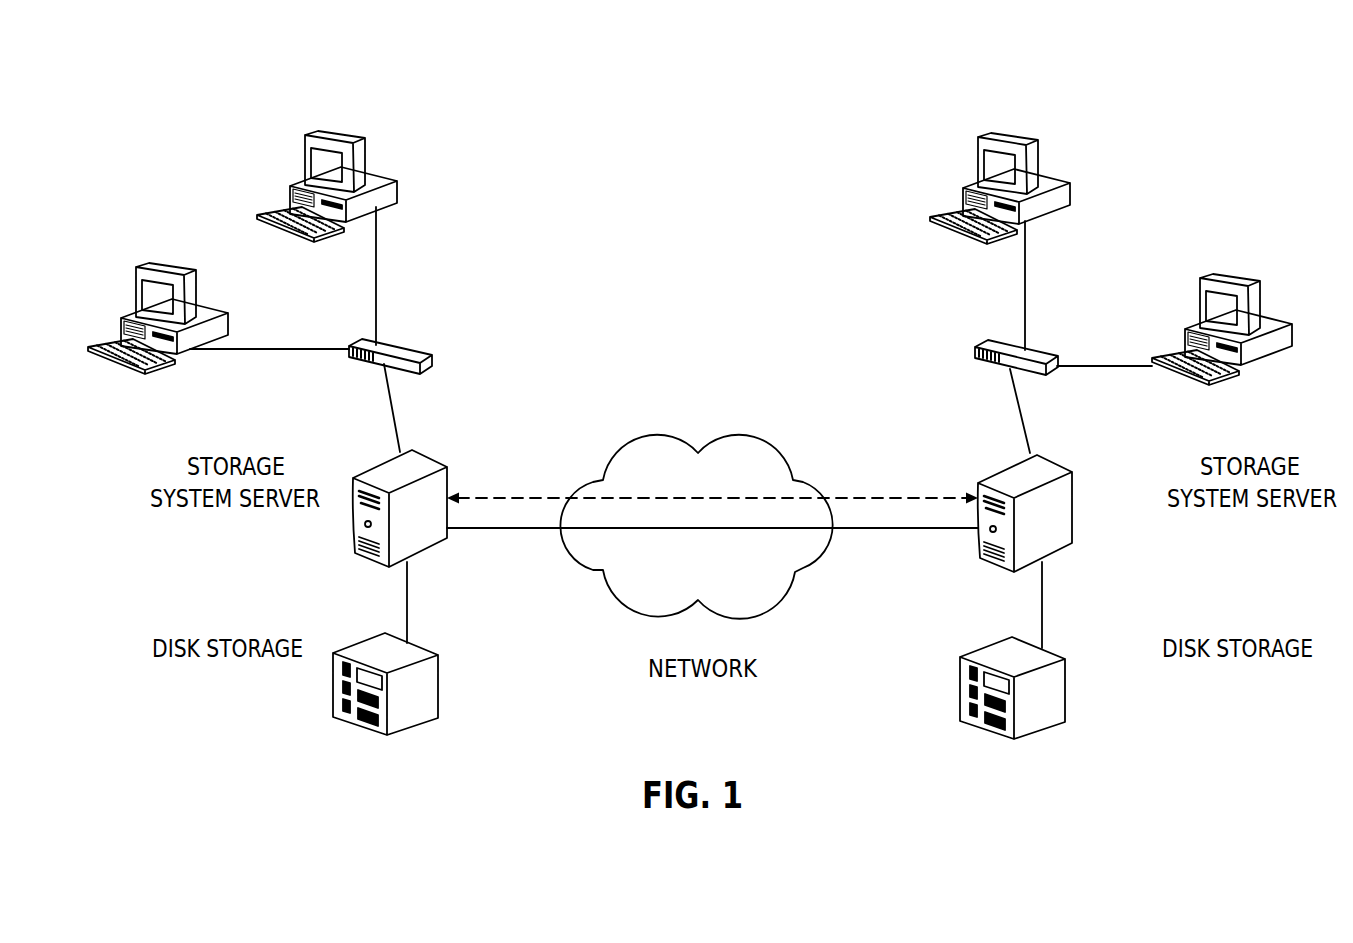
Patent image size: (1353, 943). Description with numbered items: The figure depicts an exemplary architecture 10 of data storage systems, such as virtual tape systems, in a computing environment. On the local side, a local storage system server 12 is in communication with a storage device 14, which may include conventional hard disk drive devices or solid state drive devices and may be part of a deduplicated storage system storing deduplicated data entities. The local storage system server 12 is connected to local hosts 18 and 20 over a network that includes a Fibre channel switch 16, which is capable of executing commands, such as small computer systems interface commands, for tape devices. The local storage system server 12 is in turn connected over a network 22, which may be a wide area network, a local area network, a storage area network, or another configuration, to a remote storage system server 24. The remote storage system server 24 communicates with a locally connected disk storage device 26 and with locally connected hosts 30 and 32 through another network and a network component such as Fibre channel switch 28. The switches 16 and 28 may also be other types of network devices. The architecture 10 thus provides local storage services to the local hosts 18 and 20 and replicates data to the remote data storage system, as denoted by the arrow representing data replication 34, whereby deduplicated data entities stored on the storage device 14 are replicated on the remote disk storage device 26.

The architecture 10 is at (1228, 100).
The local storage system server 12 is at (423, 453).
The storage device 14 is at (438, 687).
The Fibre channel switch 16 is at (392, 343).
The local host 18 is at (202, 297).
The local host 20 is at (373, 158).
The network 22 is at (775, 450).
The remote storage system server 24 is at (1073, 515).
The disk storage device 26 is at (1067, 693).
The Fibre channel switch 28 is at (998, 343).
The host 30 is at (1045, 158).
The host 32 is at (1267, 300).
The data replication 34 is at (862, 498).